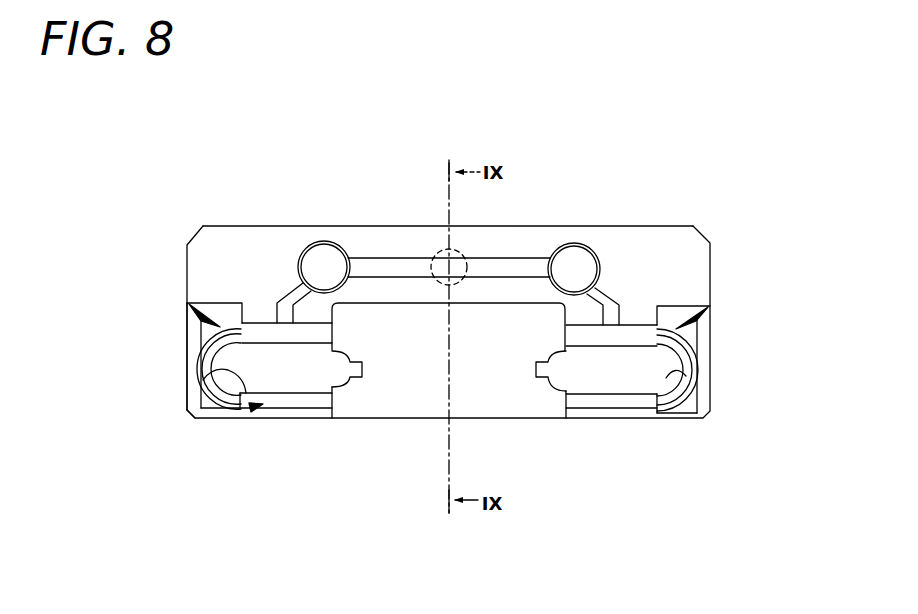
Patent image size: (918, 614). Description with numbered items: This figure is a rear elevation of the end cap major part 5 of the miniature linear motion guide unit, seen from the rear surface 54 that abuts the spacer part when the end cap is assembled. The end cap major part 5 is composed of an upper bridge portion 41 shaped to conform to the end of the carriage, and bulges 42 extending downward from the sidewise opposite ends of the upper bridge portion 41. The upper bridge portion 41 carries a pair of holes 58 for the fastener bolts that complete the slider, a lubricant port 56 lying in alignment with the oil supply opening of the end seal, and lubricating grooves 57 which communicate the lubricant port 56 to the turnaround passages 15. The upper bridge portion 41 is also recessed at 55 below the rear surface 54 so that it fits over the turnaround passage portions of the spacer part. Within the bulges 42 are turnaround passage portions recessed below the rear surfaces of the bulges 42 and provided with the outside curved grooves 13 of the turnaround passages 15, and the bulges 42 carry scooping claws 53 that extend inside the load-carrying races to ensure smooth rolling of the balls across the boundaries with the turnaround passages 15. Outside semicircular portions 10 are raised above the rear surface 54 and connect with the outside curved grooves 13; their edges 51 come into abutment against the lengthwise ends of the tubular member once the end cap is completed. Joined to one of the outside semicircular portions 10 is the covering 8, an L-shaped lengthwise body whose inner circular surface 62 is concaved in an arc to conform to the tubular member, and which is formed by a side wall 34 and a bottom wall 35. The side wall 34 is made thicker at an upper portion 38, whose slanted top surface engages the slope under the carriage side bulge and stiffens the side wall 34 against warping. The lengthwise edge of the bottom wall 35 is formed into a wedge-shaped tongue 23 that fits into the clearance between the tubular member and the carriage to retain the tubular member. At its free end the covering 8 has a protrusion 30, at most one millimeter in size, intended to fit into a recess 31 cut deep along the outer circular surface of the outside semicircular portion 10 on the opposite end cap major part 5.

The end cap major part 5 is at (340, 222).
The covering 8 is at (201, 391).
The outside semicircular portion 10 is at (209, 387).
The outside curved groove 13 is at (313, 382).
The turnaround passage 15 is at (291, 378).
The tongue 23 is at (256, 410).
The protrusion 30 is at (199, 328).
The recess 31 is at (696, 321).
The side wall 34 is at (193, 378).
The bottom wall 35 is at (204, 416).
The upper portion 38 is at (190, 333).
The upper bridge portion 41 is at (377, 262).
The bulge 42 is at (255, 311).
The edge 51 is at (205, 365).
The scooping claw 53 is at (362, 372).
The rear surface 54 is at (535, 240).
The recess 55 is at (312, 337).
The lubricant port 56 is at (456, 250).
The lubricating groove 57 is at (407, 267).
The hole 58 is at (322, 262).
The inner circular surface 62 is at (252, 410).